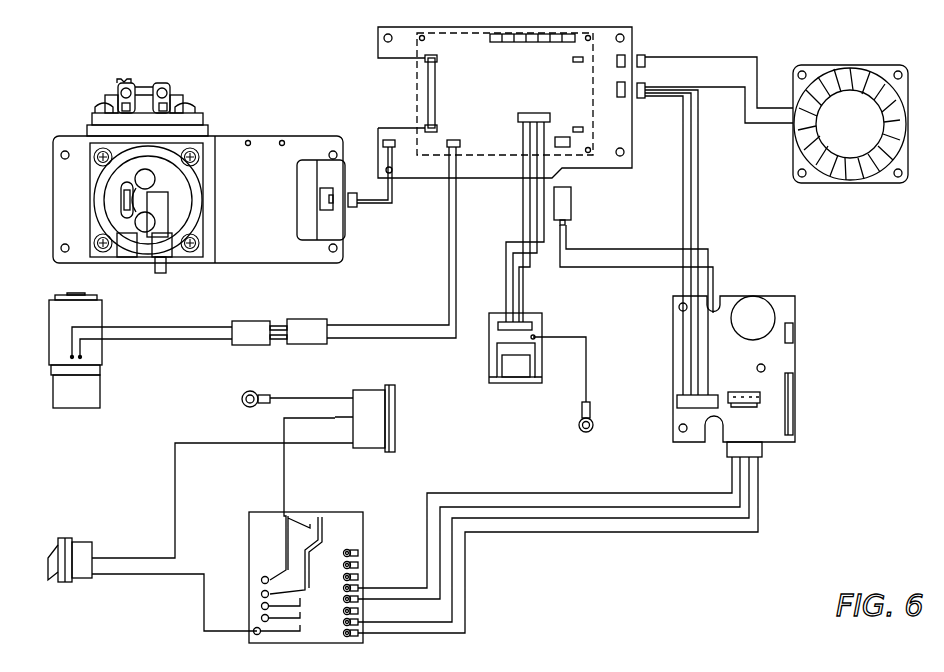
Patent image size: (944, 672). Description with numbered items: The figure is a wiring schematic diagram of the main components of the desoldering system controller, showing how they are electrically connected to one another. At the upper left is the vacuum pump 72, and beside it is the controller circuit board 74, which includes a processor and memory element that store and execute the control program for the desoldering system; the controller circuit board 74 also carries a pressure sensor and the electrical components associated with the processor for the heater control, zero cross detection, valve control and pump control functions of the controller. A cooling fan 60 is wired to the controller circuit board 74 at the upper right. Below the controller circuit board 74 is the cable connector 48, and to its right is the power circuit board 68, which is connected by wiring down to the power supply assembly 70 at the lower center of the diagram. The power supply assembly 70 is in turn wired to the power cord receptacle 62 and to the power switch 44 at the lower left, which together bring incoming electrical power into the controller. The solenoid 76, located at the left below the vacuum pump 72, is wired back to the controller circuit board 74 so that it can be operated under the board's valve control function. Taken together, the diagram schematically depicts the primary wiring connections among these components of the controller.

The power switch 44 is at (80, 580).
The cable connector 48 is at (510, 383).
The cooling fan 60 is at (851, 187).
The power cord receptacle 62 is at (396, 410).
The power circuit board 68 is at (797, 402).
The power supply assembly 70 is at (377, 511).
The vacuum pump 72 is at (226, 135).
The controller circuit board 74 is at (400, 96).
The solenoid 76 is at (100, 392).